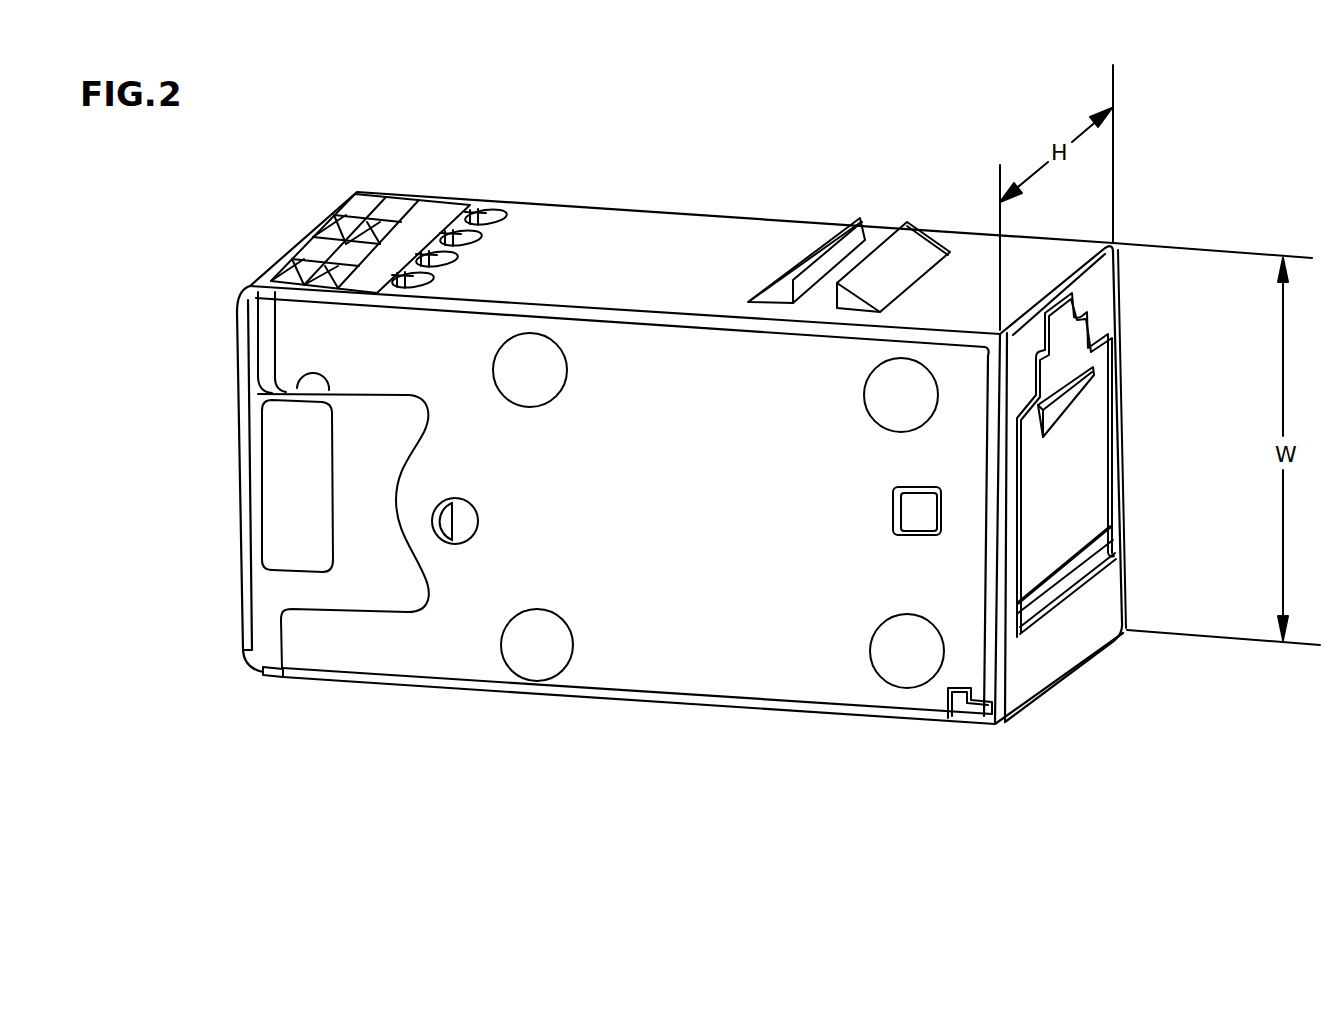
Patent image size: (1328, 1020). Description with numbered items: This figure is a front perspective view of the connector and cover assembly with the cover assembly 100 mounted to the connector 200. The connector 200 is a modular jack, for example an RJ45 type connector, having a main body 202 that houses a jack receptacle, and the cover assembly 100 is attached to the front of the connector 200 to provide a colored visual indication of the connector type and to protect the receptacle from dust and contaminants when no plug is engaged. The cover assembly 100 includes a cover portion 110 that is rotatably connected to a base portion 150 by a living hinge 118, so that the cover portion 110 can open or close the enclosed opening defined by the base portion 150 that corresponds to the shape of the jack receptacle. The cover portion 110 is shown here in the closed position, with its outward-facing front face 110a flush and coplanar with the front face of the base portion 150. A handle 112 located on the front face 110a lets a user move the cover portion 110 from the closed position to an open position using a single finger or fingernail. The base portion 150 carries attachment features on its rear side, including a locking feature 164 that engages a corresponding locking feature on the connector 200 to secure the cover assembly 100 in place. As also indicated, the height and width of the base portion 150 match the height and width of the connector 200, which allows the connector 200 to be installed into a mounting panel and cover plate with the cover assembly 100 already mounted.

The connector 200 is at (592, 233).
The main body 202 is at (676, 240).
The base portion 150 is at (1062, 658).
The cover portion 110 is at (1098, 480).
The front face 110a is at (1085, 440).
The handle 112 is at (1085, 383).
The living hinge 118 is at (1093, 562).
The cover assembly 100 is at (1123, 533).
The locking feature 164 is at (960, 700).